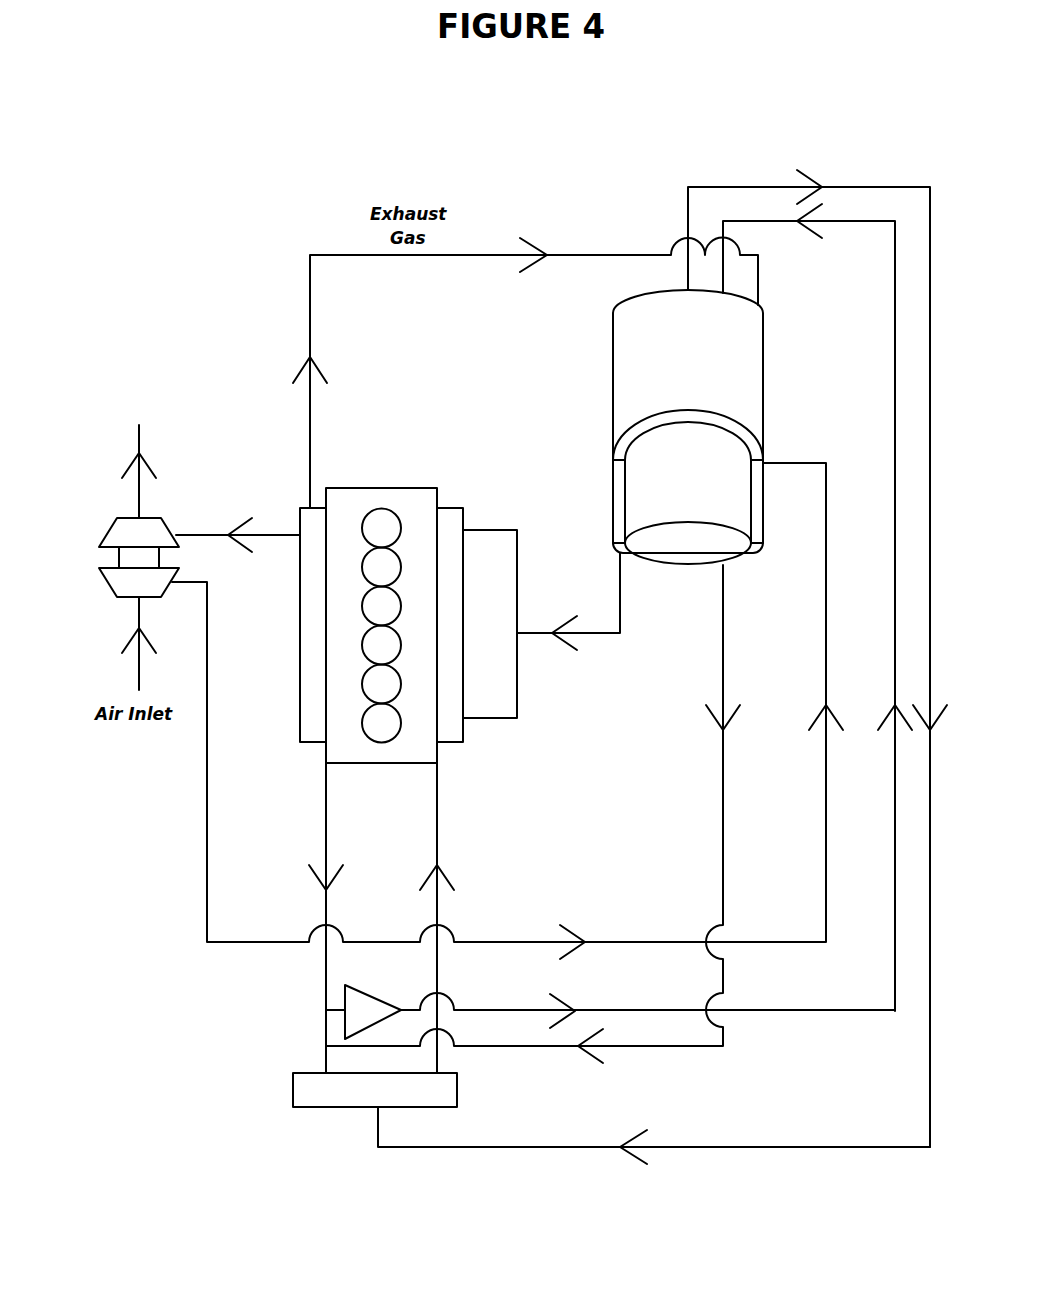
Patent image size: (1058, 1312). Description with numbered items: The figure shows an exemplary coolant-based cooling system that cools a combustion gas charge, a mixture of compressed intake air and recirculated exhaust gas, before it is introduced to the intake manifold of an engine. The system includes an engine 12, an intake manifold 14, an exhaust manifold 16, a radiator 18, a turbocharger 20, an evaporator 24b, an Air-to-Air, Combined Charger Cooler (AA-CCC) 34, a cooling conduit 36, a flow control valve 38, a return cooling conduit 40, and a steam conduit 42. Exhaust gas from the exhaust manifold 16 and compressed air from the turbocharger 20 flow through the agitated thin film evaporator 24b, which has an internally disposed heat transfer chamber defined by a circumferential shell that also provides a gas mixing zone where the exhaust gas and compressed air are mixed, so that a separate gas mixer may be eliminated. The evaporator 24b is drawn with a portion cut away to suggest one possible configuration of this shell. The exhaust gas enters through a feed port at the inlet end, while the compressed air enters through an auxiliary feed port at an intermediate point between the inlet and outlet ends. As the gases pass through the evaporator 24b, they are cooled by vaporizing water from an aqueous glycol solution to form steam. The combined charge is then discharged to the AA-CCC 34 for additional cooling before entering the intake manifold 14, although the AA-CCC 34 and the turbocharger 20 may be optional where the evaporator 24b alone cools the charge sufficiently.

The engine 12 is at (381, 646).
The intake manifold 14 is at (452, 740).
The exhaust manifold 16 is at (292, 625).
The radiator 18 is at (397, 1095).
The turbocharger 20 is at (114, 557).
The evaporator 24b is at (688, 427).
The Air-to-Air, Combined Charger Cooler (AA-CCC) 34 is at (490, 624).
The cooling conduit 36 is at (648, 1005).
The flow control valve 38 is at (368, 1003).
The return cooling conduit 40 is at (533, 814).
The steam conduit 42 is at (654, 1162).